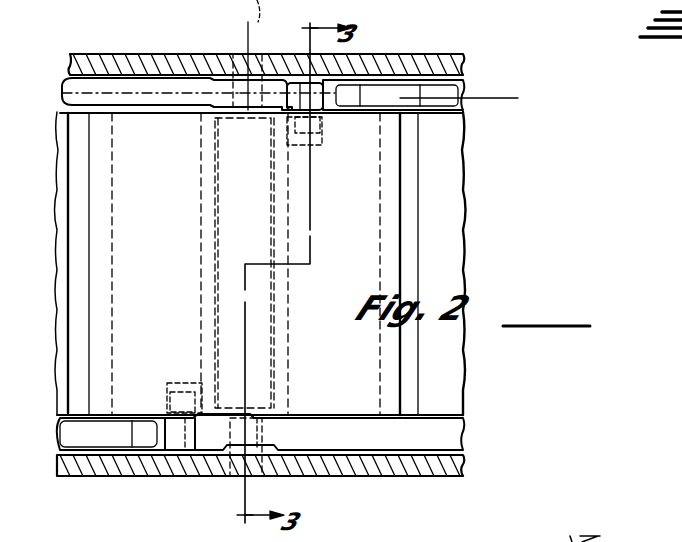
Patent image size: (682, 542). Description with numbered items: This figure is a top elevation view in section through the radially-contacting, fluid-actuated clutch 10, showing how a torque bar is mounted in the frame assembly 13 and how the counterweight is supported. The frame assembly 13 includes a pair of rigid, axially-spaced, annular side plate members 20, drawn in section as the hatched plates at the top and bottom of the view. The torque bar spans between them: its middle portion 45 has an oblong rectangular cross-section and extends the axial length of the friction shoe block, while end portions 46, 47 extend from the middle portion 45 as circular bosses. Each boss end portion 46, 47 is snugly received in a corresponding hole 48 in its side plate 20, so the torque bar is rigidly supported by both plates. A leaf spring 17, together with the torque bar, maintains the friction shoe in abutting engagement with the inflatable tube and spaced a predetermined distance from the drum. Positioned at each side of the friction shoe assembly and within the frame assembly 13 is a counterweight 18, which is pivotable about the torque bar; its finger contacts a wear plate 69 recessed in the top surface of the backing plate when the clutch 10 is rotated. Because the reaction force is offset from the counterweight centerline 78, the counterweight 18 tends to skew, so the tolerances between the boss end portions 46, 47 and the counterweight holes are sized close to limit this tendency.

The side plate member 20 is at (156, 58).
The end portion of torque bar 47 is at (218, 93).
The counterweight centerline 78 is at (496, 98).
The counterweight 18 is at (300, 88).
The hole 48 is at (222, 55).
The middle portion of torque bar 45 is at (215, 231).
The leaf spring 17 is at (215, 130).
The wear plate 69 is at (323, 143).
The end portion of torque bar 46 is at (258, 440).
The frame assembly 13 is at (556, 532).
The fluid-actuated clutch 10 is at (606, 532).